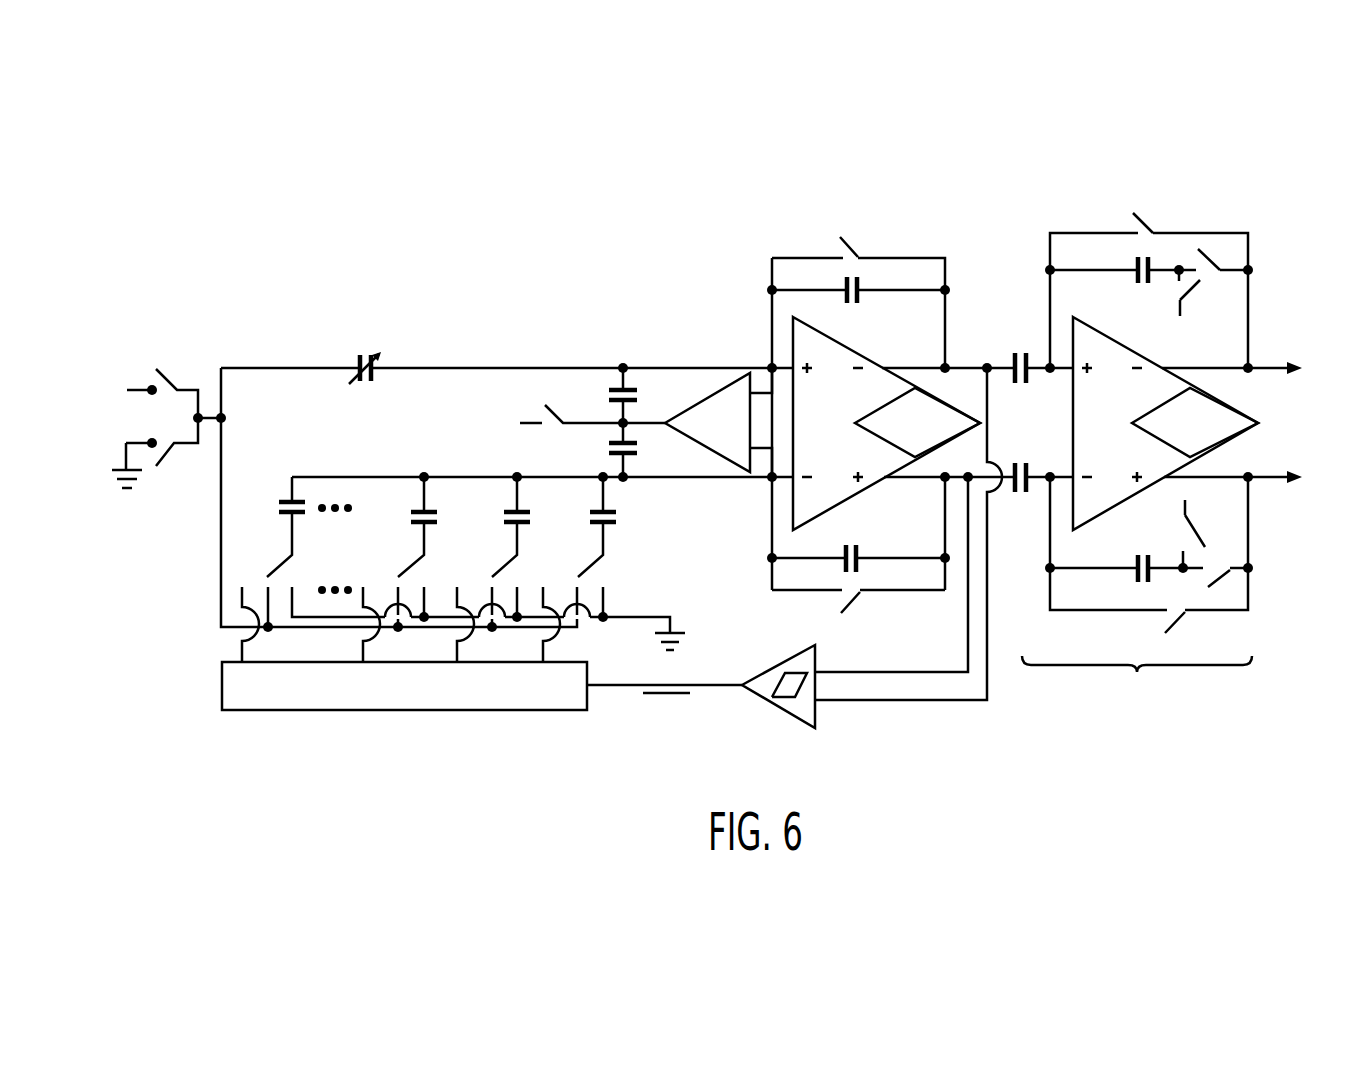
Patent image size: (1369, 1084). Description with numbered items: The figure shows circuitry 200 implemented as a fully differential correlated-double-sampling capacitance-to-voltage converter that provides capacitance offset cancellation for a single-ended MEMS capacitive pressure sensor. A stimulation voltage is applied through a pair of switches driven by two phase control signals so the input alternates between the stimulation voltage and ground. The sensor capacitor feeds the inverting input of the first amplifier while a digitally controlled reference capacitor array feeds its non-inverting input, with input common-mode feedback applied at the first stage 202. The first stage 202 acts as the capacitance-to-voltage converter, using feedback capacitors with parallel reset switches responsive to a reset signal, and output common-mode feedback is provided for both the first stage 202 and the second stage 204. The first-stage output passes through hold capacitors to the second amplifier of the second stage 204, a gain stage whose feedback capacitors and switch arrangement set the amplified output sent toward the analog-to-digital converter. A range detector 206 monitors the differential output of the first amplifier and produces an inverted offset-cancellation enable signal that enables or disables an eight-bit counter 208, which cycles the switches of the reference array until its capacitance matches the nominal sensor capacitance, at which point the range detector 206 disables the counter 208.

The circuitry 200 is at (724, 440).
The first stage 202 is at (876, 214).
The second stage 204 is at (1169, 172).
The range detector 206 is at (768, 665).
The counter 208 is at (222, 687).